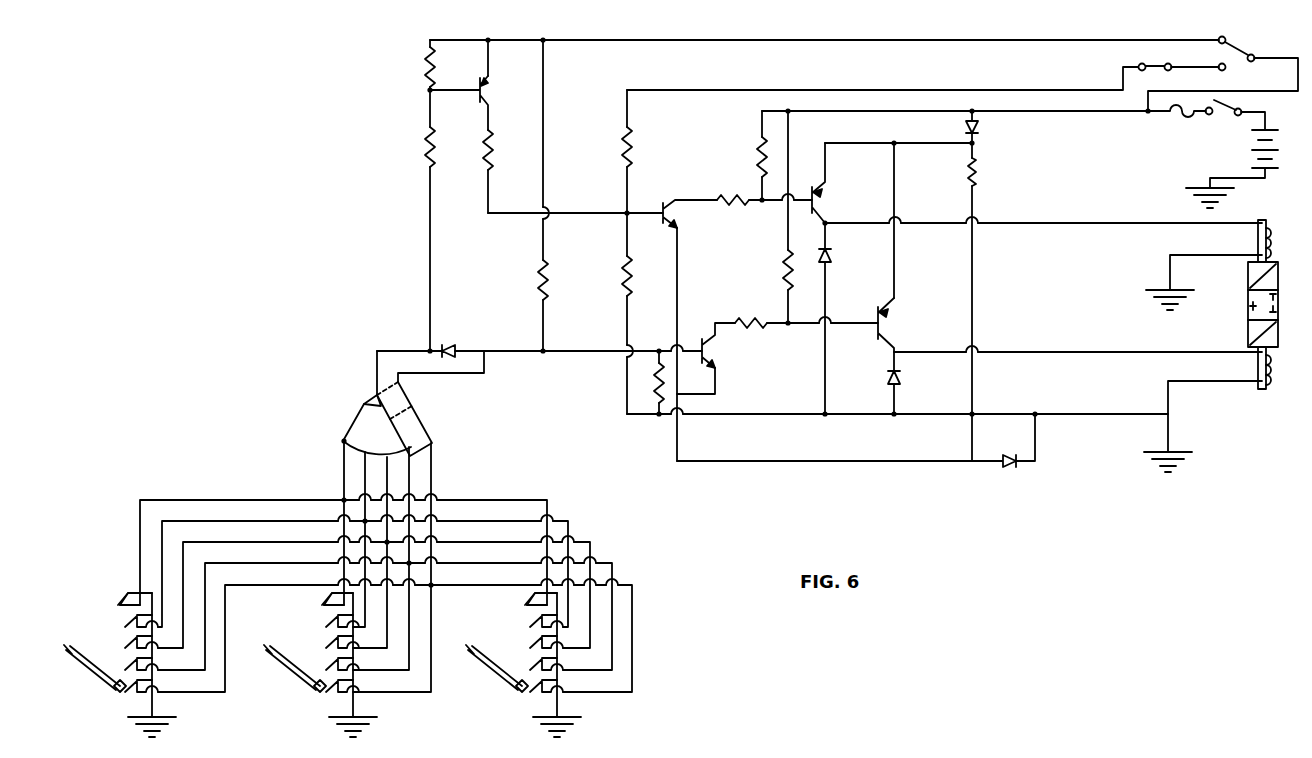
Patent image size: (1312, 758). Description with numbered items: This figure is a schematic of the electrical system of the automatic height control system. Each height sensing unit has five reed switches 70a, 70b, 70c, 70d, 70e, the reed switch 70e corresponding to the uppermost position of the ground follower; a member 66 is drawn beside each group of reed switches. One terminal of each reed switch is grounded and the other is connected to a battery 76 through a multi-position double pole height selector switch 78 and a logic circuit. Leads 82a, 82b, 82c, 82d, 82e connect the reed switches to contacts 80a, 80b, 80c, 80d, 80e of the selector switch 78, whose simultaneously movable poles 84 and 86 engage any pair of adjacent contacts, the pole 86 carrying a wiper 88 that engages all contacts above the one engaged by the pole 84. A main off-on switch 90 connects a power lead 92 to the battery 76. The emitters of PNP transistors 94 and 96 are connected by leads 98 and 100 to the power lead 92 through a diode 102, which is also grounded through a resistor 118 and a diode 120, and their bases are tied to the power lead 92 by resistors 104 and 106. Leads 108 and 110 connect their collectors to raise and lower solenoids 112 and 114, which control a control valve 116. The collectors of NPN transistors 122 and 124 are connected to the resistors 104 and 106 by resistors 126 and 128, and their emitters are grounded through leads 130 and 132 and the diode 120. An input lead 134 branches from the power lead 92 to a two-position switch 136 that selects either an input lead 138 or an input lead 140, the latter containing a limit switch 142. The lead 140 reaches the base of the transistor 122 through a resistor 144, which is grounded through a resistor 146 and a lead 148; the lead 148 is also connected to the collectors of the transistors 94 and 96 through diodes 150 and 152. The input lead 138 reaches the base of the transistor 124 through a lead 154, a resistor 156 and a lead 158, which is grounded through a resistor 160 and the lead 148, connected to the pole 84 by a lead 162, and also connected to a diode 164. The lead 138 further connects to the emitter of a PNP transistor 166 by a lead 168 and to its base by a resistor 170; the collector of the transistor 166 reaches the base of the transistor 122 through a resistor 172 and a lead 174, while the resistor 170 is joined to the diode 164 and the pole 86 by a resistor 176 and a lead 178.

The actuator arm 66 is at (114, 693).
The reed switch 70a is at (127, 684).
The reed switch 70b is at (130, 662).
The reed switch 70c is at (130, 641).
The reed switch 70d is at (127, 620).
The reed switch 70e is at (124, 598).
The battery 76 is at (1268, 131).
The height selector switch 78 is at (352, 409).
The contact 80a is at (433, 443).
The contact 80b is at (411, 455).
The contact 80c is at (412, 462).
The contact 80d is at (364, 453).
The contact 80e is at (341, 441).
The lead 82a is at (634, 598).
The lead 82b is at (614, 566).
The lead 82c is at (592, 545).
The lead 82d is at (570, 524).
The lead 82e is at (549, 501).
The pole 84 is at (408, 400).
The pole 86 is at (368, 400).
The wiper 88 is at (346, 424).
The main off-on switch 90 is at (1230, 104).
The power lead 92 is at (880, 112).
The PNP transistor 94 is at (816, 202).
The PNP transistor 96 is at (879, 325).
The lead 98 is at (862, 144).
The lead 100 is at (894, 267).
The diode 102 is at (977, 128).
The resistor 104 is at (759, 152).
The resistor 106 is at (785, 268).
The lead 108 is at (1032, 223).
The lead 110 is at (1042, 352).
The raise solenoid 112 is at (1270, 240).
The lower solenoid 114 is at (1270, 373).
The control valve 116 is at (1278, 296).
The resistor 118 is at (975, 170).
The diode 120 is at (1011, 468).
The NPN transistor 122 is at (690, 214).
The NPN transistor 124 is at (724, 345).
The resistor 126 is at (737, 202).
The resistor 128 is at (769, 328).
The lead 130 is at (677, 298).
The lead 132 is at (716, 390).
The input lead 134 is at (1296, 76).
The two-position switch 136 is at (1246, 40).
The input lead 138 is at (990, 40).
The input lead 140 is at (979, 89).
The limit switch 142 is at (1160, 68).
The resistor 144 is at (628, 144).
The resistor 146 is at (628, 266).
The lead 148 is at (862, 415).
The diode 150 is at (830, 253).
The diode 152 is at (898, 376).
The lead 154 is at (543, 137).
The resistor 156 is at (545, 276).
The lead 158 is at (606, 354).
The resistor 160 is at (657, 385).
The lead 162 is at (484, 366).
The diode 164 is at (448, 345).
The PNP transistor 166 is at (488, 97).
The lead 168 is at (488, 60).
The resistor 170 is at (427, 63).
The resistor 172 is at (490, 150).
The lead 174 is at (578, 212).
The resistor 176 is at (427, 148).
The lead 178 is at (428, 268).